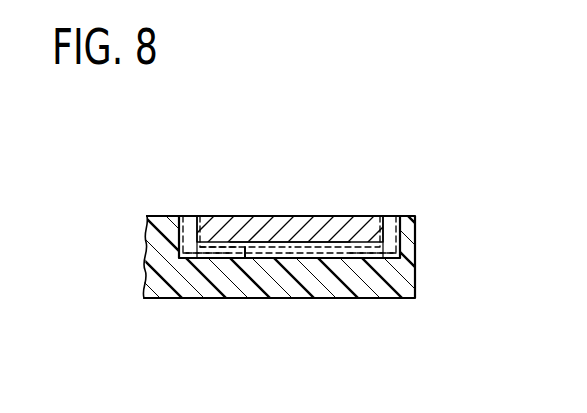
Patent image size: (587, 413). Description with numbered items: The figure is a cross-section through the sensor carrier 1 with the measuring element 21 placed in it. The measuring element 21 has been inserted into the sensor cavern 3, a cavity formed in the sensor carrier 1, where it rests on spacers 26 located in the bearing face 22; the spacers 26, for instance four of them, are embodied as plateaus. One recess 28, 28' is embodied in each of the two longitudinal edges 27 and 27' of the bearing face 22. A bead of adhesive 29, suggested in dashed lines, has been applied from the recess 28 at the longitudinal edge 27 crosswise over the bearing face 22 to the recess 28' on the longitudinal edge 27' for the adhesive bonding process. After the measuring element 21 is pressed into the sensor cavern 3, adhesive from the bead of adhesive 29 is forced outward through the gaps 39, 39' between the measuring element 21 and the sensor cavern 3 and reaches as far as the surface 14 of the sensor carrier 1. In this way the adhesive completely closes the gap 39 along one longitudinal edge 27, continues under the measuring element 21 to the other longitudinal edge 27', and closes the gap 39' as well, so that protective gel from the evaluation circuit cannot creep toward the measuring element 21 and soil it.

The sensor carrier 1 is at (413, 240).
The sensor cavern 3 is at (283, 242).
The surface 14 is at (160, 215).
The measuring element 21 is at (318, 226).
The bearing face 22 is at (360, 258).
The spacers 26 is at (328, 253).
The longitudinal edge 27 is at (143, 268).
The longitudinal edge 27' is at (431, 281).
The recess 28 is at (187, 182).
The recess 28' is at (440, 195).
The bead of adhesive 29 is at (208, 253).
The gap 39 is at (236, 179).
The gap 39' is at (352, 179).